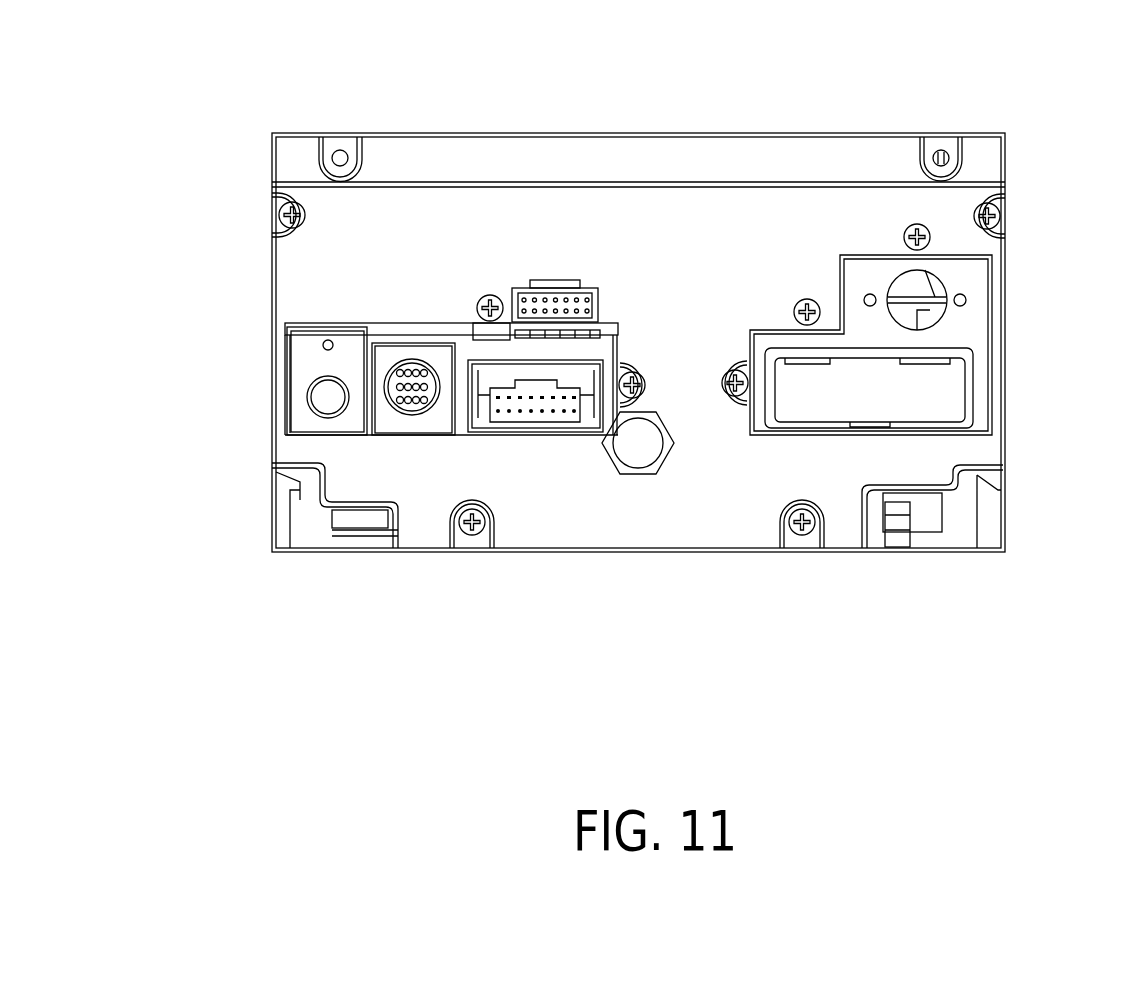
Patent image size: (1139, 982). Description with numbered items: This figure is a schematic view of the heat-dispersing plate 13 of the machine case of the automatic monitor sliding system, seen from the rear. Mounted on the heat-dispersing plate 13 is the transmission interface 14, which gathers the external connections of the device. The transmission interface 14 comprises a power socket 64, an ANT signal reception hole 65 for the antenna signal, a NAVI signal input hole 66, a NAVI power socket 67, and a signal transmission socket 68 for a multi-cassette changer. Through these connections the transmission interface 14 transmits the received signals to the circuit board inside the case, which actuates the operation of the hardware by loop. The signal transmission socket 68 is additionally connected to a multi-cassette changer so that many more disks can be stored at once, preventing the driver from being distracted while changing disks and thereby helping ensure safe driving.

The heat-dispersing plate 13 is at (770, 150).
The transmission interface 14 is at (427, 313).
The power socket 64 is at (945, 391).
The ANT signal reception hole 65 is at (322, 392).
The NAVI signal input hole 66 is at (412, 405).
The NAVI power socket 67 is at (565, 298).
The signal transmission socket for multi-cassette changer 68 is at (535, 410).